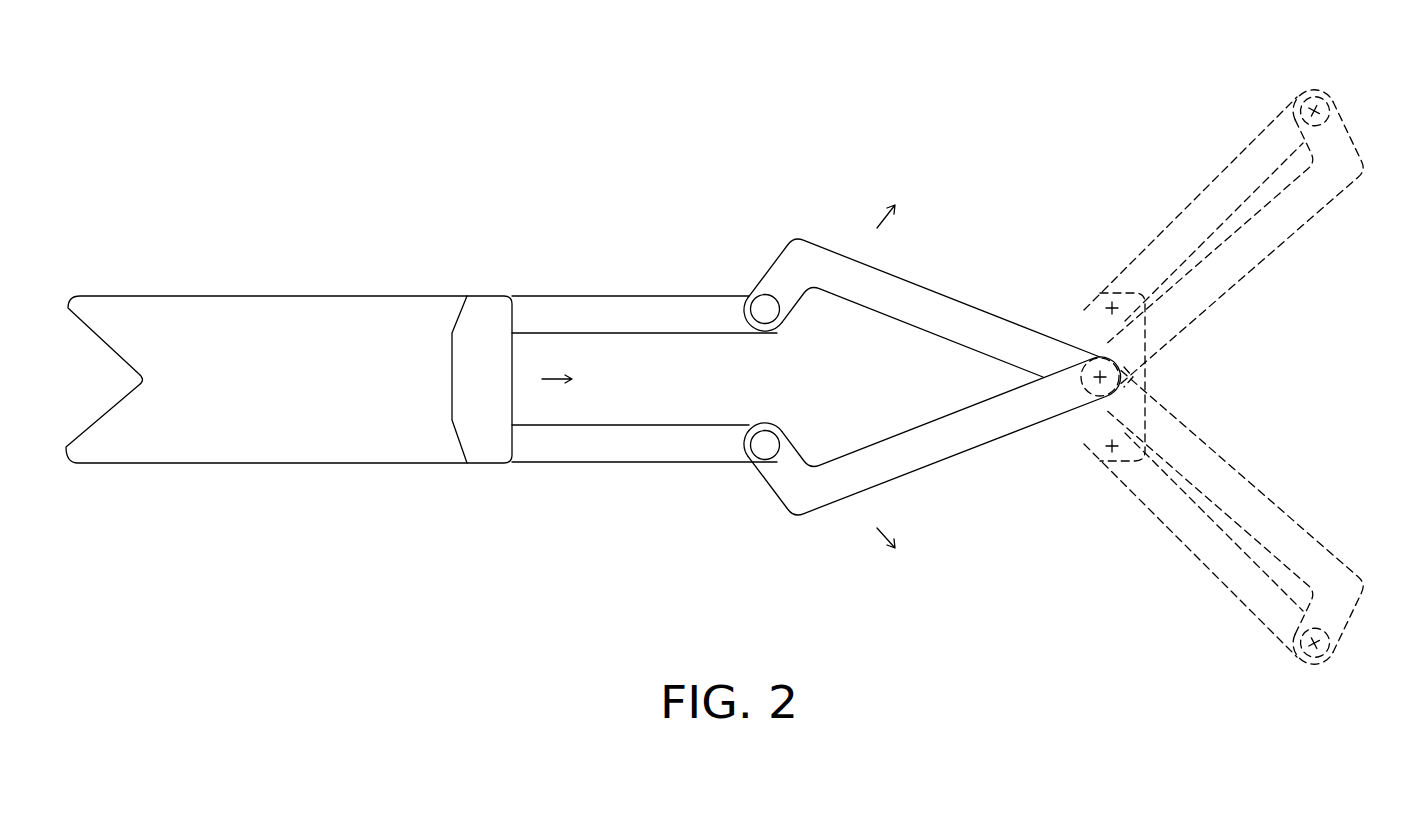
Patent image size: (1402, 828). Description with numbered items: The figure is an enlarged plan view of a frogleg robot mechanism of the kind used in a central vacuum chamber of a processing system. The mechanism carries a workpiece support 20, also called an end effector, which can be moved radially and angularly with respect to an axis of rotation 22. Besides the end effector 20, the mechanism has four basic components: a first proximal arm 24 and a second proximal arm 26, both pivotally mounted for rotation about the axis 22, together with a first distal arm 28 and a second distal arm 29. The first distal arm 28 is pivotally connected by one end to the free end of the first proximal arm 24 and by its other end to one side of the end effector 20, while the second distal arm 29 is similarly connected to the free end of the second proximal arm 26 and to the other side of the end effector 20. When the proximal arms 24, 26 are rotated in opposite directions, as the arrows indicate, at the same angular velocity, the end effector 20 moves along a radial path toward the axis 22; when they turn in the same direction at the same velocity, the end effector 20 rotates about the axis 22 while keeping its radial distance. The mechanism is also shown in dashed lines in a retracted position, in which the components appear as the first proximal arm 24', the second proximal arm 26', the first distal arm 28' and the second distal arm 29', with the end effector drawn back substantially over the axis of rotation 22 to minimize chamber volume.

The workpiece support 20 is at (218, 312).
The axis of rotation 22 is at (1098, 376).
The first proximal arm 24 is at (922, 279).
The second proximal arm 26 is at (932, 436).
The first distal arm 28 is at (644, 252).
The second distal arm 29 is at (644, 483).
The first proximal arm in retracted position 24' is at (1239, 249).
The second proximal arm in retracted position 26' is at (1239, 505).
The first distal arm in retracted position 28' is at (1193, 209).
The second distal arm in retracted position 29' is at (1193, 545).